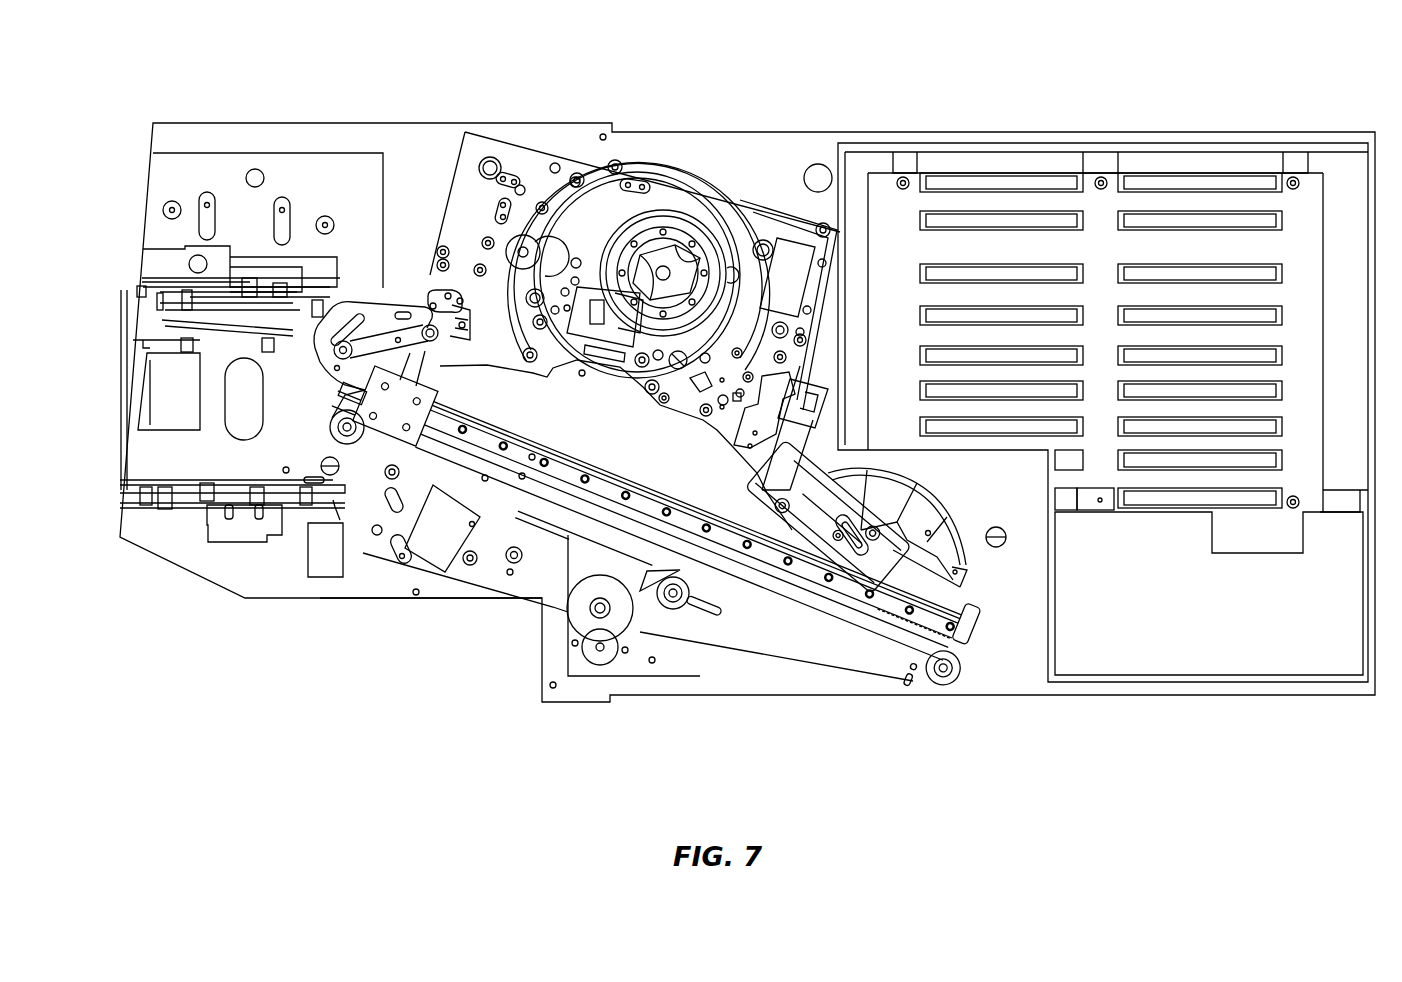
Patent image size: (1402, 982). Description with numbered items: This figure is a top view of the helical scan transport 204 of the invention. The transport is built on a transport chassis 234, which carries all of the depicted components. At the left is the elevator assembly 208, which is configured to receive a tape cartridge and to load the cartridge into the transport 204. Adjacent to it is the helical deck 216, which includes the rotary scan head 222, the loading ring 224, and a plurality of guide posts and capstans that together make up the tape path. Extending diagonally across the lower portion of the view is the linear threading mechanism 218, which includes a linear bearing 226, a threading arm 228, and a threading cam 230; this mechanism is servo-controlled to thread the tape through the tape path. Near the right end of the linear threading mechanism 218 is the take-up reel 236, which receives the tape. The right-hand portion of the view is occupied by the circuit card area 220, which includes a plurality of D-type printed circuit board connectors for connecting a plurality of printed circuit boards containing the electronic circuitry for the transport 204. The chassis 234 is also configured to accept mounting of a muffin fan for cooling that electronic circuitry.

The helical scan transport 204 is at (326, 96).
The elevator assembly 208 is at (120, 447).
The helical deck 216 is at (512, 152).
The linear threading mechanism 218 is at (624, 435).
The circuit card area 220 is at (1105, 210).
The rotary scan head 222 is at (672, 222).
The loading ring 224 is at (665, 160).
The linear bearing 226 is at (525, 452).
The threading arm 228 is at (392, 420).
The threading cam 230 is at (547, 377).
The transport chassis 234 is at (1140, 697).
The take-up reel 236 is at (918, 478).